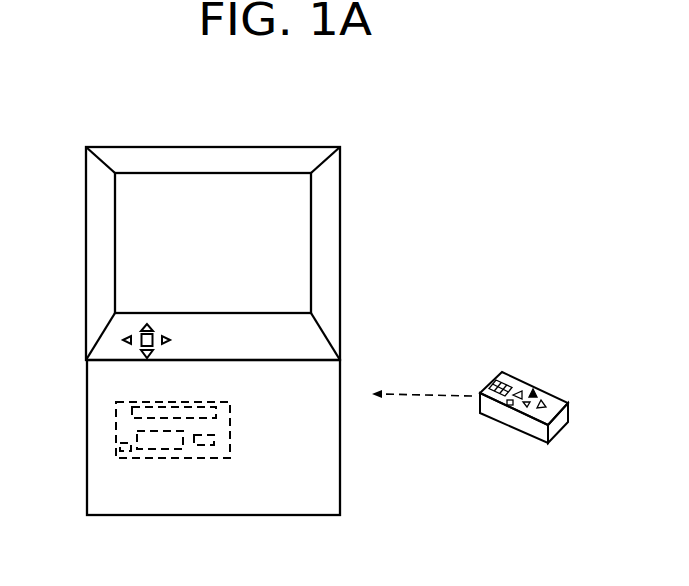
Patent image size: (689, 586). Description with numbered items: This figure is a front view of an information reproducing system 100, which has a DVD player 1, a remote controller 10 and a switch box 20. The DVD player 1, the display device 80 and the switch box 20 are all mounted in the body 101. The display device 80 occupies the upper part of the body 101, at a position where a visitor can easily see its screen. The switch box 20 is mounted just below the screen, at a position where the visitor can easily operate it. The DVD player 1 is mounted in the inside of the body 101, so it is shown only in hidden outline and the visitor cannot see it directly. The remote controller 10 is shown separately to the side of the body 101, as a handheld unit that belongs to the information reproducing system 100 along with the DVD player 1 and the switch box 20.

The information reproducing system 100 is at (391, 131).
The display device 80 is at (297, 218).
The switch box 20 is at (125, 350).
The body 101 is at (341, 412).
The DVD player 1 is at (116, 428).
The remote controller 10 is at (559, 433).